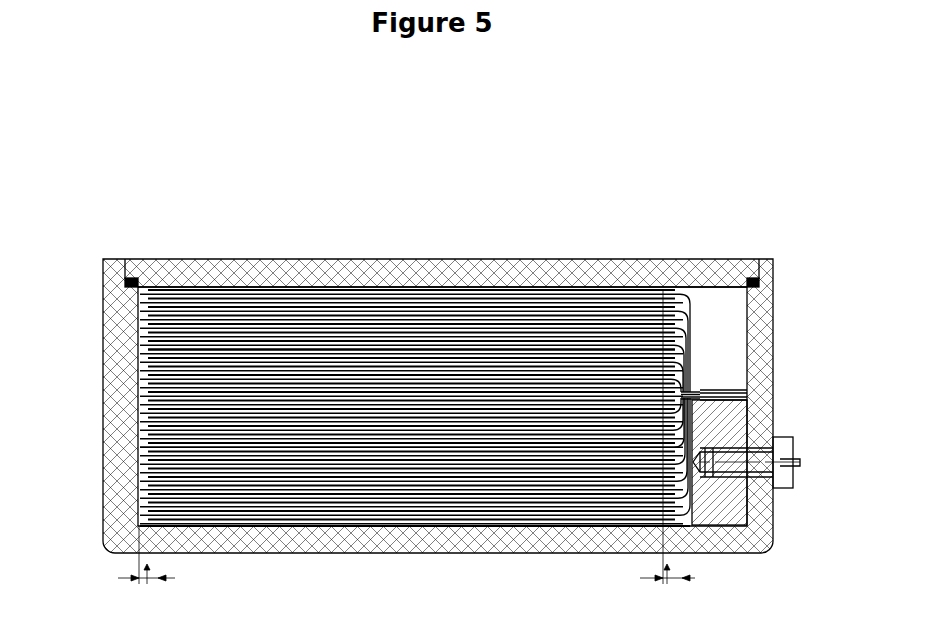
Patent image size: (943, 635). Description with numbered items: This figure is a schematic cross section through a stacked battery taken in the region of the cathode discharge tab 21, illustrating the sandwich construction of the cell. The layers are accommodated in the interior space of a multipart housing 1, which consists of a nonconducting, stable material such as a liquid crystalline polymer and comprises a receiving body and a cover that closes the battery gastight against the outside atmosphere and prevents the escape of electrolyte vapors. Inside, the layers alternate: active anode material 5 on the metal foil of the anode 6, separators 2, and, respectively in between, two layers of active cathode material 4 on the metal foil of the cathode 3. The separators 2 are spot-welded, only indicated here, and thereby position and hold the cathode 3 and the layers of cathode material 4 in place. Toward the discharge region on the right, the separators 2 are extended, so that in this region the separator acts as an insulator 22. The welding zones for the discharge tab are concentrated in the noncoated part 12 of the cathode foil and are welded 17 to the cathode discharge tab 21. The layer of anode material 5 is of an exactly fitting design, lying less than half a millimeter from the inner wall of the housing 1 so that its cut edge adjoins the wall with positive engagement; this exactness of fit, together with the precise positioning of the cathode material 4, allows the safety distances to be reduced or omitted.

The housing 1 is at (160, 260).
The separators 2 is at (140, 342).
The cathode 3 is at (140, 358).
The active cathode material 4 is at (140, 352).
The active anode material 5 is at (140, 443).
The anode 6 is at (140, 448).
The noncoated part 12 is at (683, 372).
The weld 17 is at (717, 392).
The cathode discharge tab 21 is at (725, 502).
The insulator 22 is at (693, 382).